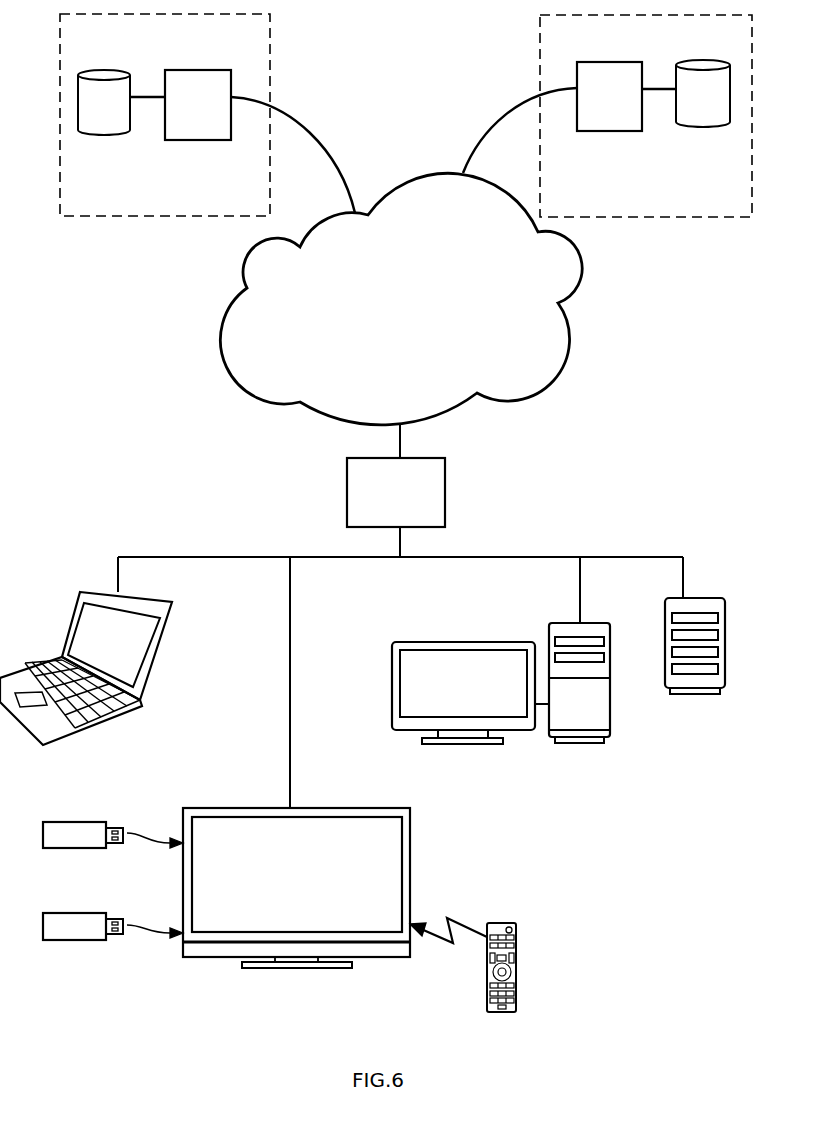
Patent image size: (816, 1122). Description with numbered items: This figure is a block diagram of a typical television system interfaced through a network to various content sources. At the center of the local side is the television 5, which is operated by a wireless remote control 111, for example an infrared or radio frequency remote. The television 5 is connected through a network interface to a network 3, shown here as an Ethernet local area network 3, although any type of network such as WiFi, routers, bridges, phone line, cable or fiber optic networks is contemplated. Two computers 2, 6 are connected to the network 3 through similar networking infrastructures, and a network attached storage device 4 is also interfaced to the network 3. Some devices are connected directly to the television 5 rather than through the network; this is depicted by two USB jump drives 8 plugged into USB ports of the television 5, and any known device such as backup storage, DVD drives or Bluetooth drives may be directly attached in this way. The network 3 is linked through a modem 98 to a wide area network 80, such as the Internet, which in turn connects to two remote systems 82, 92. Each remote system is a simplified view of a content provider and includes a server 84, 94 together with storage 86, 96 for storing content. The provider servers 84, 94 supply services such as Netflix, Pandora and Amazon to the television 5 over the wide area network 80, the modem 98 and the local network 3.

The computer 2 is at (72, 610).
The network 3 is at (183, 557).
The network attached storage device 4 is at (708, 593).
The television 5 is at (410, 848).
The computer 6 is at (477, 642).
The USB jump drives 8 is at (55, 848).
The wide area network 80 is at (418, 336).
The remote system 82 is at (601, 140).
The server 84 is at (620, 105).
The storage 86 is at (713, 115).
The remote system 92 is at (209, 147).
The server 94 is at (186, 113).
The storage 96 is at (95, 120).
The modem 98 is at (445, 483).
The wireless remote control 111 is at (518, 950).